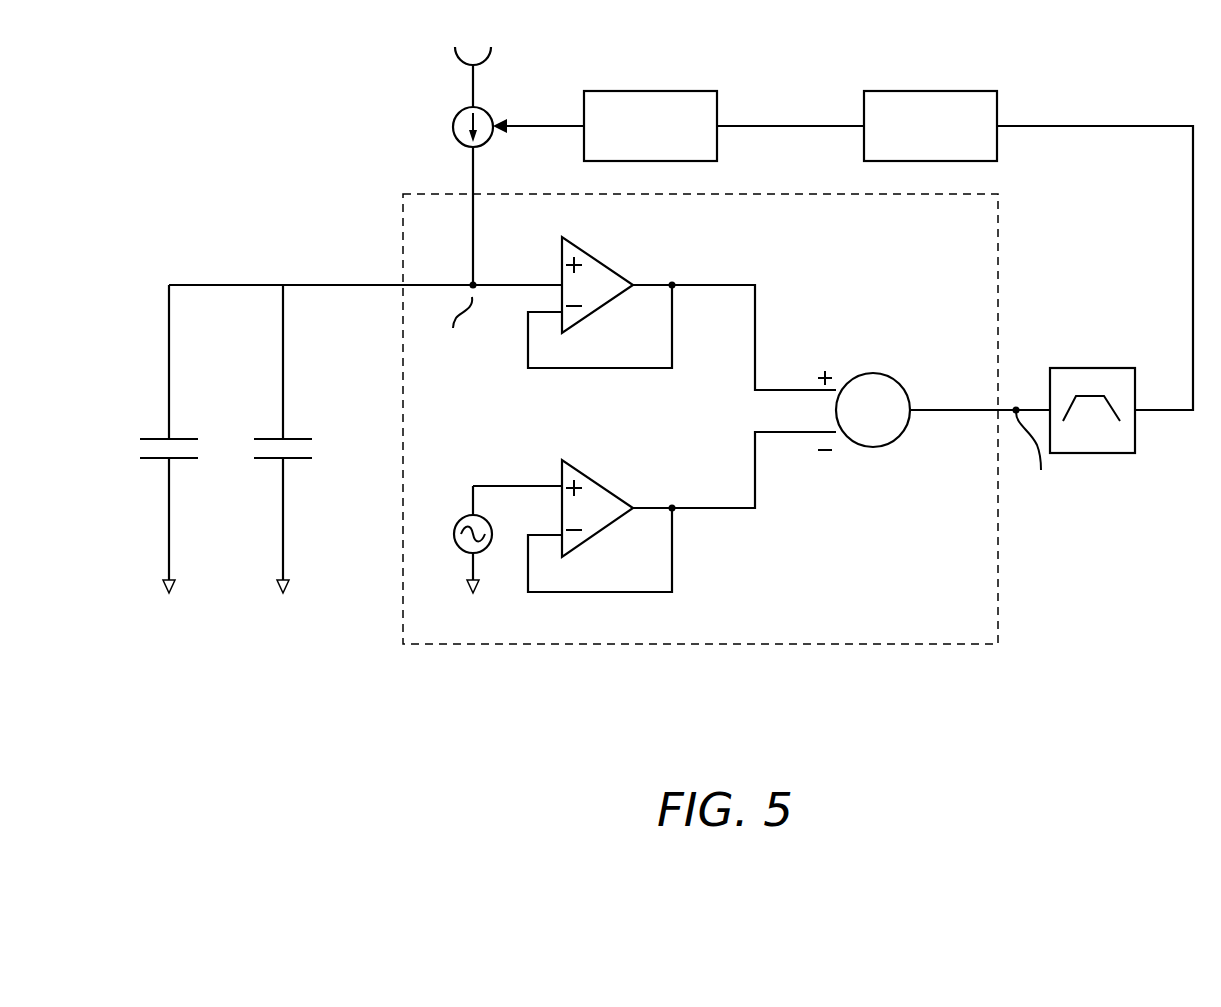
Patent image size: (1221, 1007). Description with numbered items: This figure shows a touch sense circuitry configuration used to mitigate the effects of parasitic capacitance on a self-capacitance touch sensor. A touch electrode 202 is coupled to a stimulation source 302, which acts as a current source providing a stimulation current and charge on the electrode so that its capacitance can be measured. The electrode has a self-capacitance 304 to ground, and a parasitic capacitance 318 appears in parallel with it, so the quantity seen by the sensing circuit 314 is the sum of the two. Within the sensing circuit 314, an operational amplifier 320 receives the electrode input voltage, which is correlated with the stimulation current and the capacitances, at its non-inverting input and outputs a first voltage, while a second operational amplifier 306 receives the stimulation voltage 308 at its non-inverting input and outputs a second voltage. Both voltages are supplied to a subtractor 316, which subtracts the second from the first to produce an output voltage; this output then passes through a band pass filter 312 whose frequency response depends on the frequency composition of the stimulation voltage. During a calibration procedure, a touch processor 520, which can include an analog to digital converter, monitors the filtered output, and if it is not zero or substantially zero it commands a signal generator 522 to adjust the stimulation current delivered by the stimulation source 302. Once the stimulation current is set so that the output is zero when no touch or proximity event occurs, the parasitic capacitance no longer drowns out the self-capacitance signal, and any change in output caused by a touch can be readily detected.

The touch electrode 202 is at (302, 283).
The stimulation source 302 is at (455, 98).
The self-capacitance 304 is at (313, 448).
The operational amplifier 306 is at (585, 472).
The Vstim 308 is at (462, 512).
The band pass filter 312 is at (1097, 368).
The sensing circuit 314 is at (403, 644).
The subtractor 316 is at (875, 447).
The parasitic capacitance 318 is at (196, 448).
The operational amplifier 320 is at (592, 258).
The touch processor 520 is at (930, 91).
The signal generator 522 is at (657, 91).